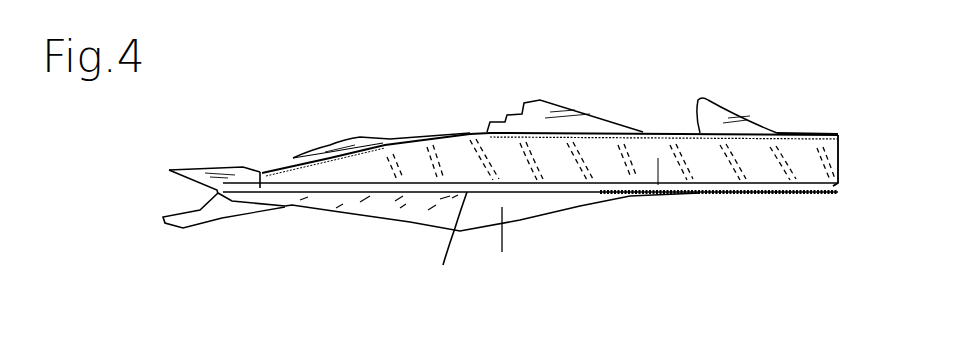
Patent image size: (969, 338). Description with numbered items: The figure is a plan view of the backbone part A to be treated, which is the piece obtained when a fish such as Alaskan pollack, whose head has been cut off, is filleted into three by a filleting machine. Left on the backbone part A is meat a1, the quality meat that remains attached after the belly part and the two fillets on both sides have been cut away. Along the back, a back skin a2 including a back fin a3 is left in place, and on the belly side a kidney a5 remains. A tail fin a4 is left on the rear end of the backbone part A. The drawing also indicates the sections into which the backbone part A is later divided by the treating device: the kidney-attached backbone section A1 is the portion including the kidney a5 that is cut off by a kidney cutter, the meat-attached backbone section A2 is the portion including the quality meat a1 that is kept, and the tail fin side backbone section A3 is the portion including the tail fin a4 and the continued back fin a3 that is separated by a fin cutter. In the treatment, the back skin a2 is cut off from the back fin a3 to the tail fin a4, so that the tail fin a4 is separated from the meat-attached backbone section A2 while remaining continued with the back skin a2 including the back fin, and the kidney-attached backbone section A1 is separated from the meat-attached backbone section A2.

The backbone part A is at (593, 206).
The kidney-attached backbone section A1 is at (817, 195).
The meat-attached backbone section A2 is at (443, 265).
The tail fin side backbone section A3 is at (260, 172).
The meat a1 is at (660, 193).
The back skin a2 is at (793, 133).
The back fin a3 is at (577, 118).
The tail fin a4 is at (218, 212).
The kidney a5 is at (767, 195).